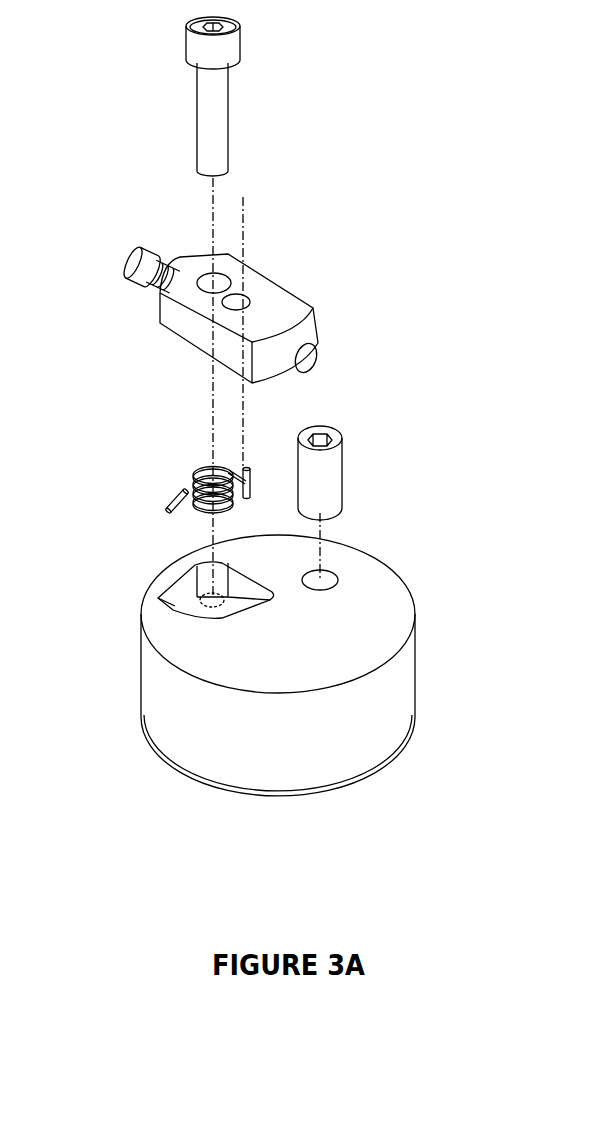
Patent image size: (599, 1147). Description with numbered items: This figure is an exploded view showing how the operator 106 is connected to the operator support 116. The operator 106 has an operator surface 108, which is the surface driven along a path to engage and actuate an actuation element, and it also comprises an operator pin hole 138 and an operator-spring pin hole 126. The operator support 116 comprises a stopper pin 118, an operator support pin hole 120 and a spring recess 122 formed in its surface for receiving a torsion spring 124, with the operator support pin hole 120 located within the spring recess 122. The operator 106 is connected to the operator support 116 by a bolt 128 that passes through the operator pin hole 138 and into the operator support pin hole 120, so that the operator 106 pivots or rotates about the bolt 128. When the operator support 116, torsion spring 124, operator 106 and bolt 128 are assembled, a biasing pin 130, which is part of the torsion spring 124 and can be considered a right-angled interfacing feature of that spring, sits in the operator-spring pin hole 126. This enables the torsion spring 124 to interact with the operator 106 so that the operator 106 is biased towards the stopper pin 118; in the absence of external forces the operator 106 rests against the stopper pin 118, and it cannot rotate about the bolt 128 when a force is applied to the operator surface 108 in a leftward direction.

The operator 106 is at (265, 289).
The operator surface 108 is at (110, 281).
The operator support 116 is at (291, 651).
The stopper pin 118 is at (343, 472).
The operator support pin hole 120 is at (212, 604).
The spring recess 122 is at (173, 590).
The torsion spring 124 is at (195, 477).
The operator-spring pin hole 126 is at (222, 302).
The bolt 128 is at (226, 130).
The biasing pin 130 is at (253, 477).
The operator pin hole 138 is at (227, 279).